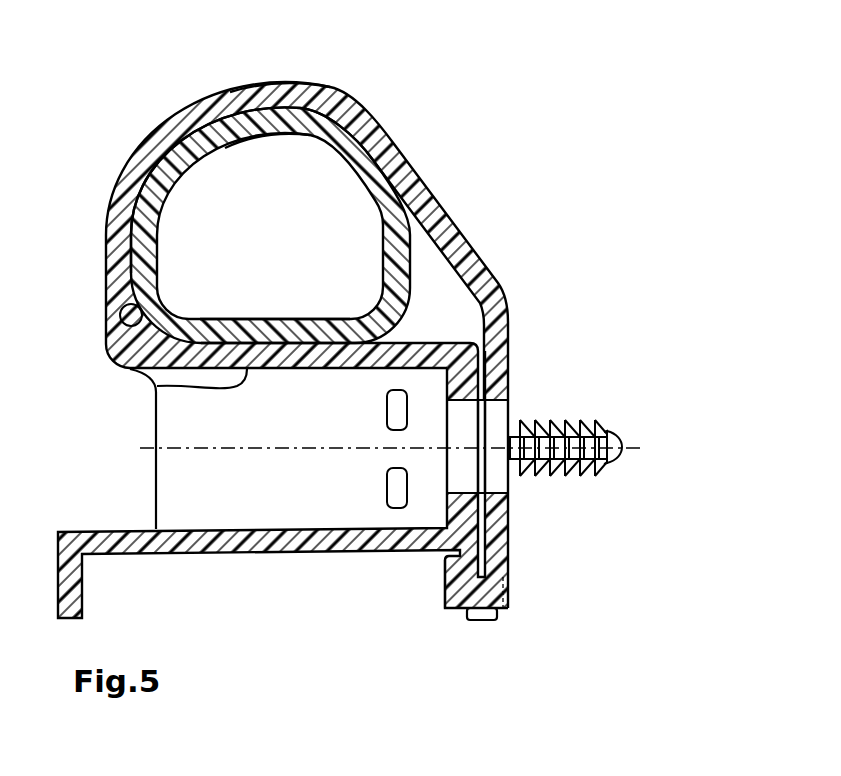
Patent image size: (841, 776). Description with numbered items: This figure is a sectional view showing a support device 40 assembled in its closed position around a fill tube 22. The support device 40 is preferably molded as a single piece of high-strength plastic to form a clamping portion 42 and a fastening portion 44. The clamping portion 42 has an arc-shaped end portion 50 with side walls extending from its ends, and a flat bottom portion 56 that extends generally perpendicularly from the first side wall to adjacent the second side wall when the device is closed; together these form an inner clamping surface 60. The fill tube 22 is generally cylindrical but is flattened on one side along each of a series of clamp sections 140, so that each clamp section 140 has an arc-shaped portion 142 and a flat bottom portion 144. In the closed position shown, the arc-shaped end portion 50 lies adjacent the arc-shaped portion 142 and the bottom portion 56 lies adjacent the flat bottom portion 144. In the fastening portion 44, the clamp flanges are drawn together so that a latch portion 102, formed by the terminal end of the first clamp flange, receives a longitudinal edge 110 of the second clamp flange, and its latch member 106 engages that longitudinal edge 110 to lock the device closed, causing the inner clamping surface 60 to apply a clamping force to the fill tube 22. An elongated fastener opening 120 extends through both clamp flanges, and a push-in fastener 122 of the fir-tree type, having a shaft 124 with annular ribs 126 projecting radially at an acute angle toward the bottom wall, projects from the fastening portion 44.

The support device 40 is at (110, 72).
The clamping portion 42 is at (180, 73).
The arc-shaped end portion 50 is at (299, 98).
The fill tube 22 is at (152, 188).
The arc-shaped portion 142 is at (252, 122).
The flat bottom portion 144 is at (255, 325).
The clamp section 140 is at (293, 335).
The inner clamping surface 60 is at (121, 332).
The flat bottom portion 56 is at (250, 373).
The fastening portion 44 is at (374, 632).
The longitudinal edge 110 is at (483, 553).
The latch member 106 is at (465, 580).
The latch portion 102 is at (480, 598).
The fastener opening 120 is at (535, 400).
The annular ribs 126 is at (595, 477).
The push-in fastener 122 is at (616, 460).
The shaft 124 is at (623, 441).